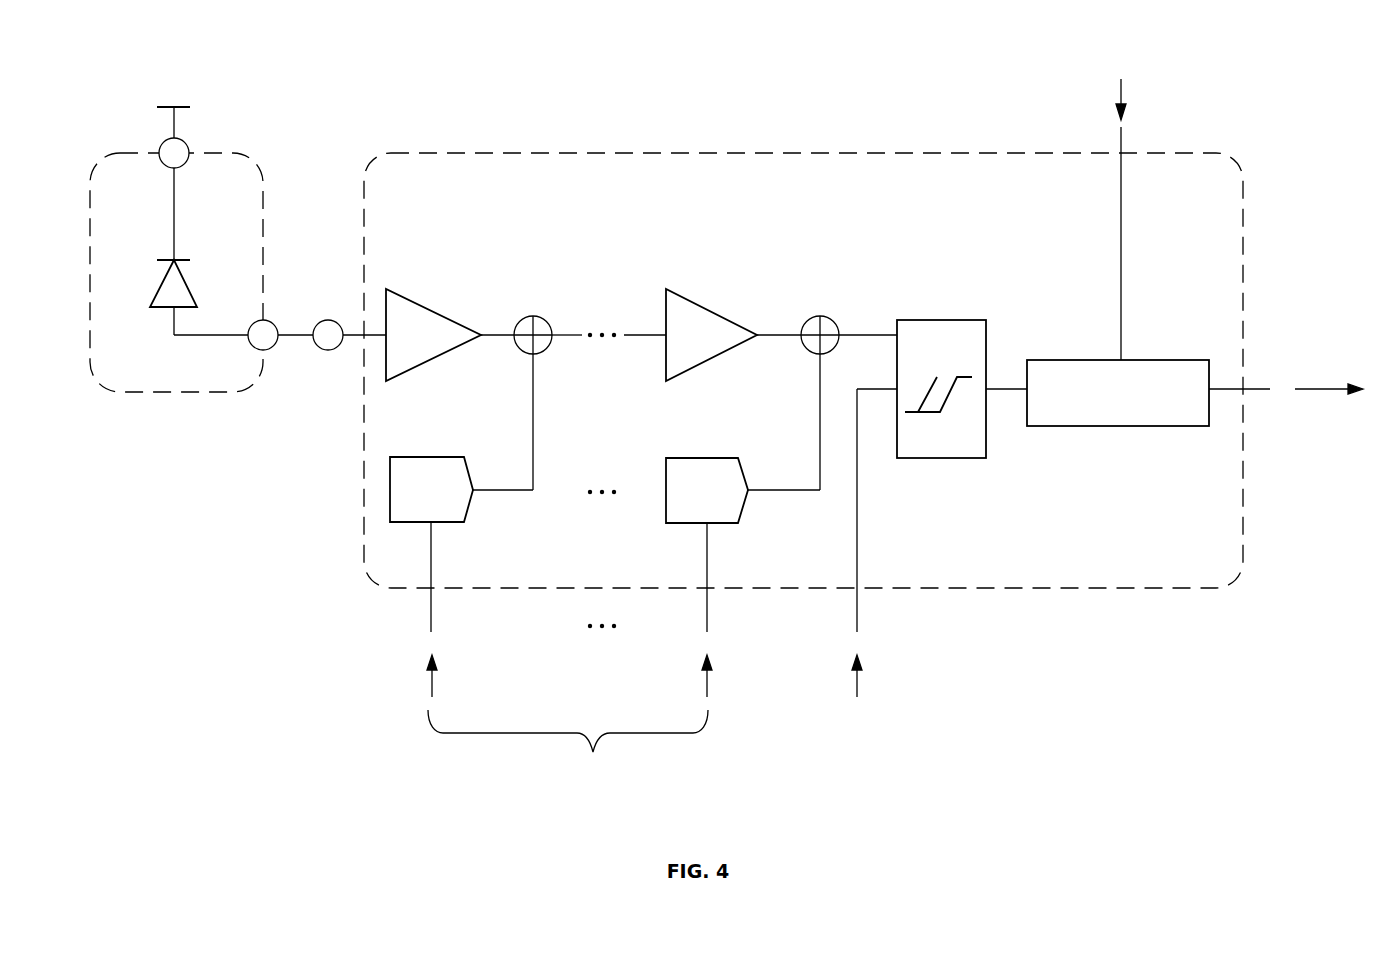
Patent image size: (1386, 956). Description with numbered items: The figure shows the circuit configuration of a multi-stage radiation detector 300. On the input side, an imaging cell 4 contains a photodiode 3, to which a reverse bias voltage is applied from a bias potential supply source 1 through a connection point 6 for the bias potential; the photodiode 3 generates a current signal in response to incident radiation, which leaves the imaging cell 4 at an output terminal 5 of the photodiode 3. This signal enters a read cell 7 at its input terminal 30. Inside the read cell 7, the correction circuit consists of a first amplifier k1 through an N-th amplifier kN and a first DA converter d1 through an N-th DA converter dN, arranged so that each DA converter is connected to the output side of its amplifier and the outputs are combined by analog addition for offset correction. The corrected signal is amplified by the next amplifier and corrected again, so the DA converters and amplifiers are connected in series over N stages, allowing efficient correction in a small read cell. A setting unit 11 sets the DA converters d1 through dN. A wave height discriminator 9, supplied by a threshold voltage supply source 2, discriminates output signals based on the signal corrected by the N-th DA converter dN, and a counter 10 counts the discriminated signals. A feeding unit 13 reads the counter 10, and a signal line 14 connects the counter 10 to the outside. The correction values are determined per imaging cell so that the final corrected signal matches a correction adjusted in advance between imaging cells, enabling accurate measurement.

The multi-stage radiation detector 300 is at (746, 60).
The bias potential supply source 1 is at (172, 105).
The connection point for the bias potential 6 is at (185, 141).
The photodiode 3 is at (188, 281).
The imaging cell 4 is at (125, 392).
The output terminal of the photodiode 5 is at (265, 349).
The input terminal 30 is at (320, 318).
The read cell 7 is at (800, 153).
The first amplifier k1 is at (434, 299).
The N-th amplifier kN is at (710, 310).
The first DA converter d1 is at (431, 457).
The N-th DA converter dN is at (707, 458).
The wave height discriminator 9 is at (941, 321).
The counter 10 is at (1134, 360).
The setting unit 11 is at (569, 720).
The threshold voltage supply source 2 is at (873, 560).
The feeding unit 13 is at (1121, 205).
The signal line 14 is at (1286, 380).